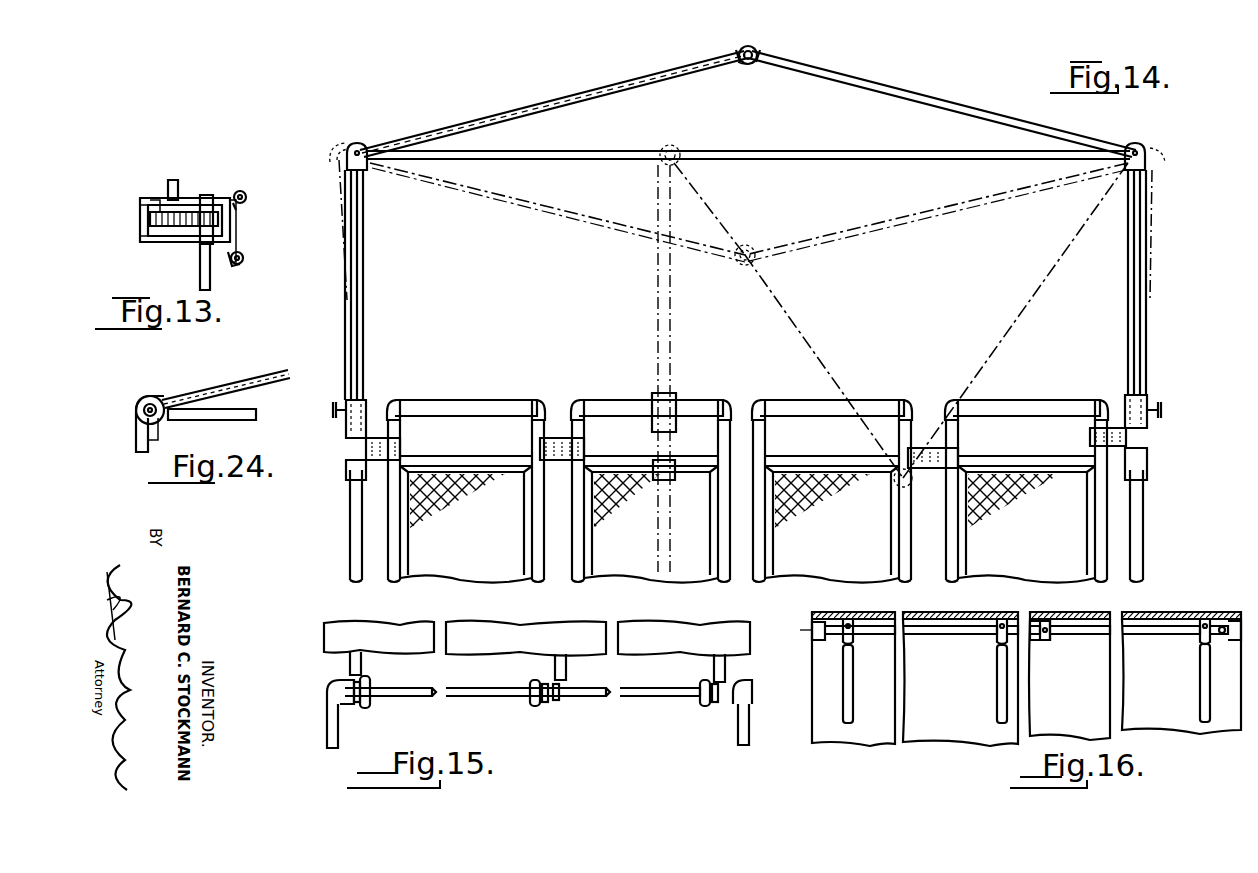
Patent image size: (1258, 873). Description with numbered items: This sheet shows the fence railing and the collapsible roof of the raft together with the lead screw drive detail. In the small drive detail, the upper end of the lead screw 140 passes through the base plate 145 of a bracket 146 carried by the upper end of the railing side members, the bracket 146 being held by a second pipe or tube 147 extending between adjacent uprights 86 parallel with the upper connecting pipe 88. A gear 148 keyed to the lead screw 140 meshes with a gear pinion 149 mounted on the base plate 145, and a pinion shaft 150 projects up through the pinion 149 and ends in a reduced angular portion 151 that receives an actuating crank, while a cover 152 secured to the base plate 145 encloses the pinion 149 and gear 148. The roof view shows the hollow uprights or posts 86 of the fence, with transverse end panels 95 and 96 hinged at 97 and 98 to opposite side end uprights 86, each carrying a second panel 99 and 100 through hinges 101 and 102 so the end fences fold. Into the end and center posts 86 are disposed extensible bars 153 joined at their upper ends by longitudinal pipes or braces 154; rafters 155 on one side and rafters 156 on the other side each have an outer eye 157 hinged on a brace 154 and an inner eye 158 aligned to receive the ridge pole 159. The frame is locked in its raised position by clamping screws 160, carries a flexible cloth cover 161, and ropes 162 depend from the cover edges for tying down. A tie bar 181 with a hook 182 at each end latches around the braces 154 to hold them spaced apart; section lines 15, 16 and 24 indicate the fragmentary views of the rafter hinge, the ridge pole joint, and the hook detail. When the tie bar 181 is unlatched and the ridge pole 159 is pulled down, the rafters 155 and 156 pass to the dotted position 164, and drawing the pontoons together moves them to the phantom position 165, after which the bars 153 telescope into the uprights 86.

In FIG. 14, the section line 15- 15 is at (372, 195).
In FIG. 14, the section line 16- 16 is at (762, 101).
In FIG. 15, the section line 24- 24 is at (378, 726).
In FIG. 14, the hollow upright or post 86 is at (352, 526).
In FIG. 13, the connecting pipe 88 is at (248, 194).
In FIG. 14, the transverse fence end panel 95 is at (494, 440).
In FIG. 14, the transverse fence end panel 96 is at (1036, 442).
In FIG. 14, the hinge 97 is at (402, 450).
In FIG. 14, the hinge 98 is at (1090, 444).
In FIG. 14, the second panel 99 is at (696, 460).
In FIG. 14, the second panel 100 is at (850, 458).
In FIG. 14, the hinge 101 is at (584, 450).
In FIG. 14, the hinge 102 is at (958, 452).
In FIG. 13, the lead screw 140 is at (212, 282).
In FIG. 13, the bracket base plate 145 is at (170, 244).
In FIG. 13, the bracket 146 is at (238, 218).
In FIG. 13, the second pipe or tube 147 is at (244, 256).
In FIG. 13, the gear 148 is at (215, 200).
In FIG. 13, the gear pinion 149 is at (150, 222).
In FIG. 13, the pinion shaft 150 is at (162, 200).
In FIG. 13, the reduced angular portion 151 is at (182, 180).
In FIG. 13, the cover 152 is at (140, 206).
In FIG. 24, the extensible bar 153 is at (142, 453).
In FIG. 14, the extensible bar 153 is at (364, 308).
In FIG. 15, the extensible bar 153 is at (326, 740).
In FIG. 24, the longitudinal pipe or brace 154 is at (160, 398).
In FIG. 15, the longitudinal pipe or brace 154 is at (490, 688).
In FIG. 24, the rafter 155 is at (252, 386).
In FIG. 14, the rafter 155 is at (566, 104).
In FIG. 15, the rafter 155 is at (350, 666).
In FIG. 16, the rafter 155 is at (791, 647).
In FIG. 14, the rafter 156 is at (913, 102).
In FIG. 15, the rafter 156 is at (567, 668).
In FIG. 16, the rafter 156 is at (854, 706).
In FIG. 24, the eye 157 is at (150, 420).
In FIG. 14, the eye 157 is at (372, 147).
In FIG. 15, the eye 157 is at (330, 688).
In FIG. 14, the eye 158 is at (742, 66).
In FIG. 16, the eye 158 is at (800, 680).
In FIG. 14, the ridge pole 159 is at (758, 50).
In FIG. 16, the ridge pole 159 is at (878, 626).
In FIG. 14, the clamping screw 160 is at (334, 420).
In FIG. 24, the flexible cover 161 is at (264, 374).
In FIG. 14, the flexible cover 161 is at (548, 102).
In FIG. 15, the flexible cover 161 is at (690, 630).
In FIG. 16, the flexible cover 161 is at (846, 612).
In FIG. 14, the rope 162 is at (343, 298).
In FIG. 14, the dotted-line position of ridge pole and rafters 164 is at (760, 256).
In FIG. 14, the phantom-line position of ridge pole and rafters 165 is at (895, 487).
In FIG. 24, the tie bar 181 is at (238, 422).
In FIG. 14, the tie bar 181 is at (856, 150).
In FIG. 24, the hook 182 is at (162, 424).
In FIG. 14, the hook 182 is at (372, 164).
In FIG. 15, the hook 182 is at (366, 710).